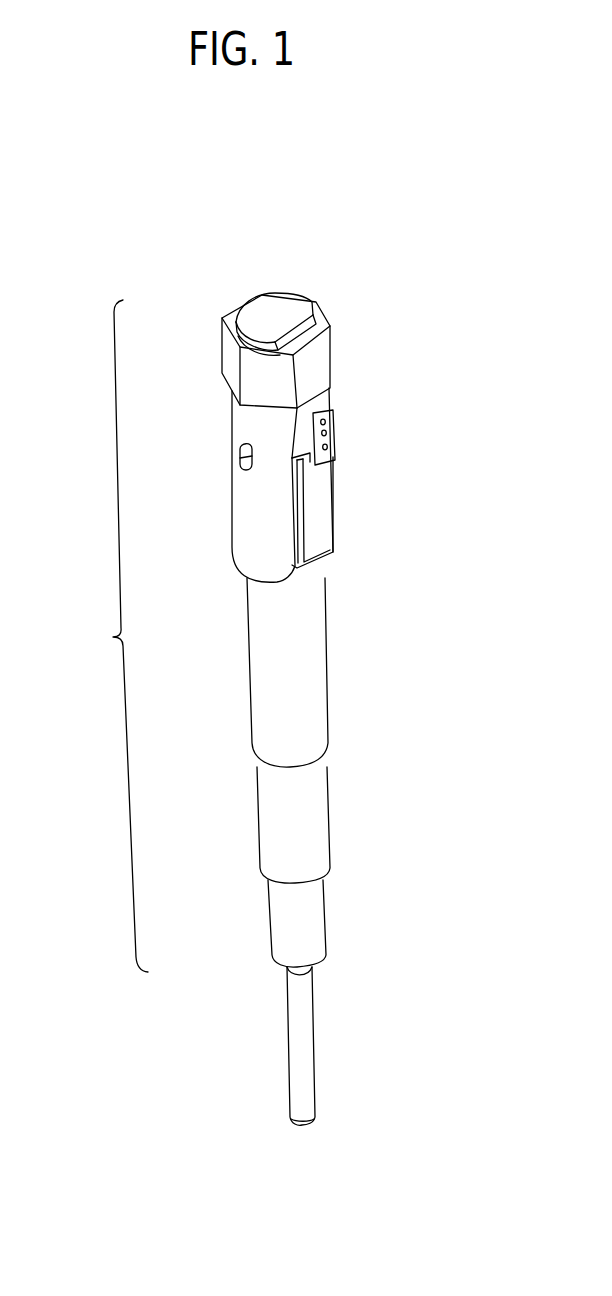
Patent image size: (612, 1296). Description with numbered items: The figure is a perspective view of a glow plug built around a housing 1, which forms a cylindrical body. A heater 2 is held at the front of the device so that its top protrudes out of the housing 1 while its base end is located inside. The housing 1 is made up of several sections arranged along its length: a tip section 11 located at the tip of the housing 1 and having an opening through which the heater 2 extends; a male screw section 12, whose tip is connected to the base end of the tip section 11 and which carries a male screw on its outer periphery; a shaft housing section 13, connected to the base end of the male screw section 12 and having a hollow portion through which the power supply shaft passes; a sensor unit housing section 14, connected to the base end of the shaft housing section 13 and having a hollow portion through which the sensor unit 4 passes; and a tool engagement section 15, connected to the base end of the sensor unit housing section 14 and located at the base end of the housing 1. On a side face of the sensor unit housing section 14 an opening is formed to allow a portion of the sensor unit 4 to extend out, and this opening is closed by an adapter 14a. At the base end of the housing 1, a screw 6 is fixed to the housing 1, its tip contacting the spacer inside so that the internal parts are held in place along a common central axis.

The housing 1 is at (110, 636).
The heater 2 is at (288, 1048).
The sensor unit 4 is at (335, 432).
The screw 6 is at (297, 292).
The tip section 11 is at (265, 918).
The male screw section 12 is at (255, 812).
The shaft housing section 13 is at (248, 657).
The sensor unit housing section 14 is at (232, 485).
The adapter 14a is at (325, 507).
The tool engagement section 15 is at (220, 350).